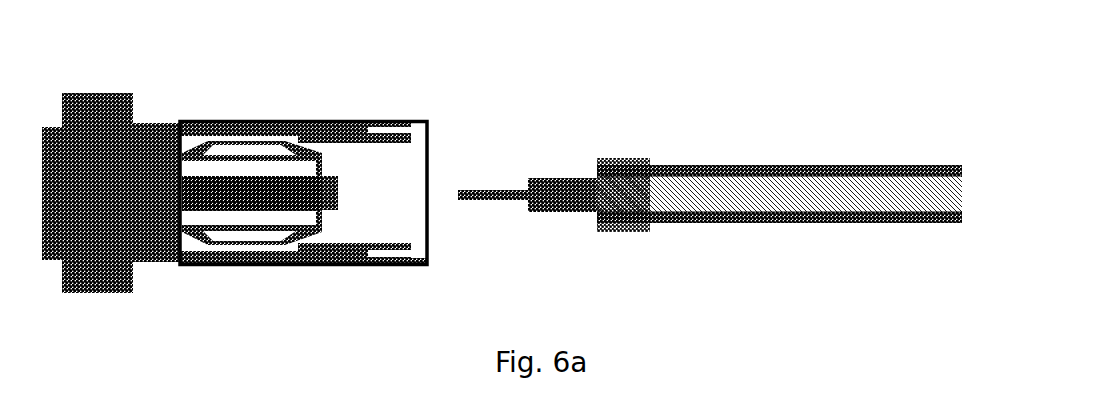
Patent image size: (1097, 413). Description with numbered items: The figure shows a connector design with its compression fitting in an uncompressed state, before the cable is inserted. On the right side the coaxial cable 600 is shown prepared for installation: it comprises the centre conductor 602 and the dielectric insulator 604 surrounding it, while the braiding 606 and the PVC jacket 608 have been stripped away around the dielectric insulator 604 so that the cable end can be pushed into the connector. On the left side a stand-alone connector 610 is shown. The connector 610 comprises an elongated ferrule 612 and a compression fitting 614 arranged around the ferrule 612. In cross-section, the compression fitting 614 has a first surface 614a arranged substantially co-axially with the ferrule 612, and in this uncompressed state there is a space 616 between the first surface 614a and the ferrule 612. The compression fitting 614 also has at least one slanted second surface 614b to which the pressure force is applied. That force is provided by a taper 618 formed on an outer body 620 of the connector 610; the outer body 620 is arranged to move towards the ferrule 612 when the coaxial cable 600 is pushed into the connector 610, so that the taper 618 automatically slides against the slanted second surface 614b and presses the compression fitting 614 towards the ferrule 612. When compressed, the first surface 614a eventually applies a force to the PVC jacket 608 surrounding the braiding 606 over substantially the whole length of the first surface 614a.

The coaxial cable 600 is at (884, 137).
The centre conductor 602 is at (493, 181).
The dielectric insulator 604 is at (562, 181).
The braiding 606 is at (695, 197).
The PVC jacket 608 is at (785, 167).
The connector 610 is at (226, 60).
The ferrule 612 is at (260, 193).
The compression fitting 614 is at (315, 221).
The first surface 614a is at (255, 153).
The slanted second surface 614b is at (302, 142).
The space 616 is at (302, 165).
The taper 618 is at (388, 143).
The outer body 620 is at (380, 121).